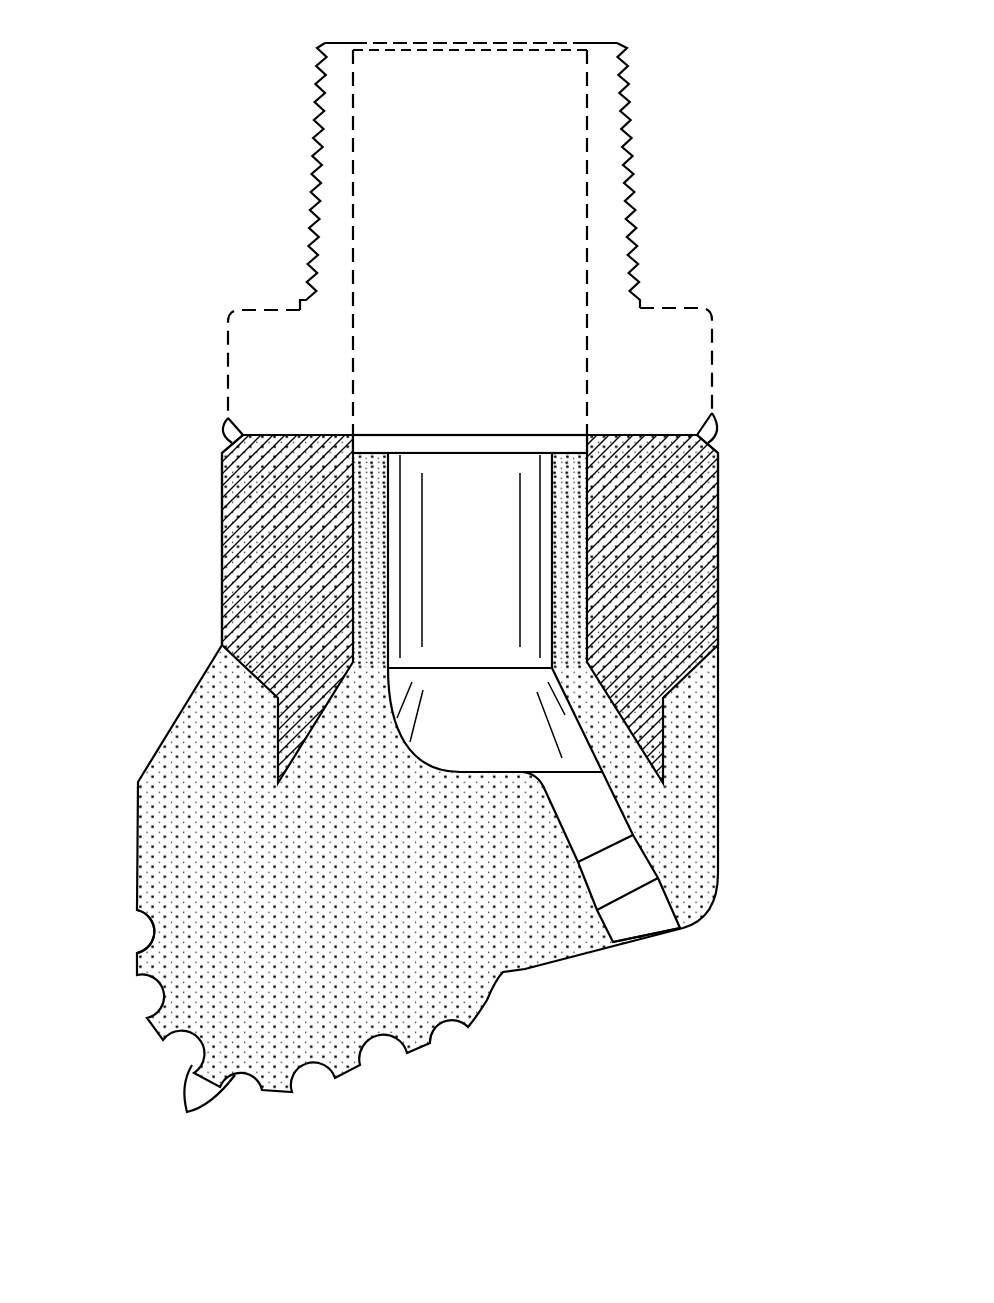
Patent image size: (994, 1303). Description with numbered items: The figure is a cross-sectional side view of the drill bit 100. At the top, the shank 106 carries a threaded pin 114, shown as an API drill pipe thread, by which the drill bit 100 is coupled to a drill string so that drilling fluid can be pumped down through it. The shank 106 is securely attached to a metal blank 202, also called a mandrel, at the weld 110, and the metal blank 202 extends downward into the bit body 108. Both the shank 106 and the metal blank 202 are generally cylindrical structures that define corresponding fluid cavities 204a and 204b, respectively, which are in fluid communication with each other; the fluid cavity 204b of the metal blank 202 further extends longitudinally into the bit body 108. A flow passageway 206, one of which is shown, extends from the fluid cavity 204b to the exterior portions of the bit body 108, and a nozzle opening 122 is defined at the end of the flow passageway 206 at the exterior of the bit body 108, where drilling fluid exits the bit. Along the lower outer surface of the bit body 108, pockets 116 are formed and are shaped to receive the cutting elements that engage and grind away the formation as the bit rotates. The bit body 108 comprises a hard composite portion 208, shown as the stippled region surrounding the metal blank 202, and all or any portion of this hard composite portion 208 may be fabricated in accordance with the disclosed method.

The drill bit 100 is at (672, 124).
The shank 106 is at (725, 348).
The bit body 108 is at (762, 719).
The weld 110 is at (224, 436).
The threaded pin 114 is at (312, 222).
The pockets 116 is at (156, 925).
The nozzle openings 122 is at (612, 942).
The metal blank 202 is at (666, 573).
The fluid cavity 204a is at (497, 255).
The fluid cavity 204b is at (497, 573).
The flow passageway 206 is at (660, 933).
The hard composite portion 208 is at (318, 905).